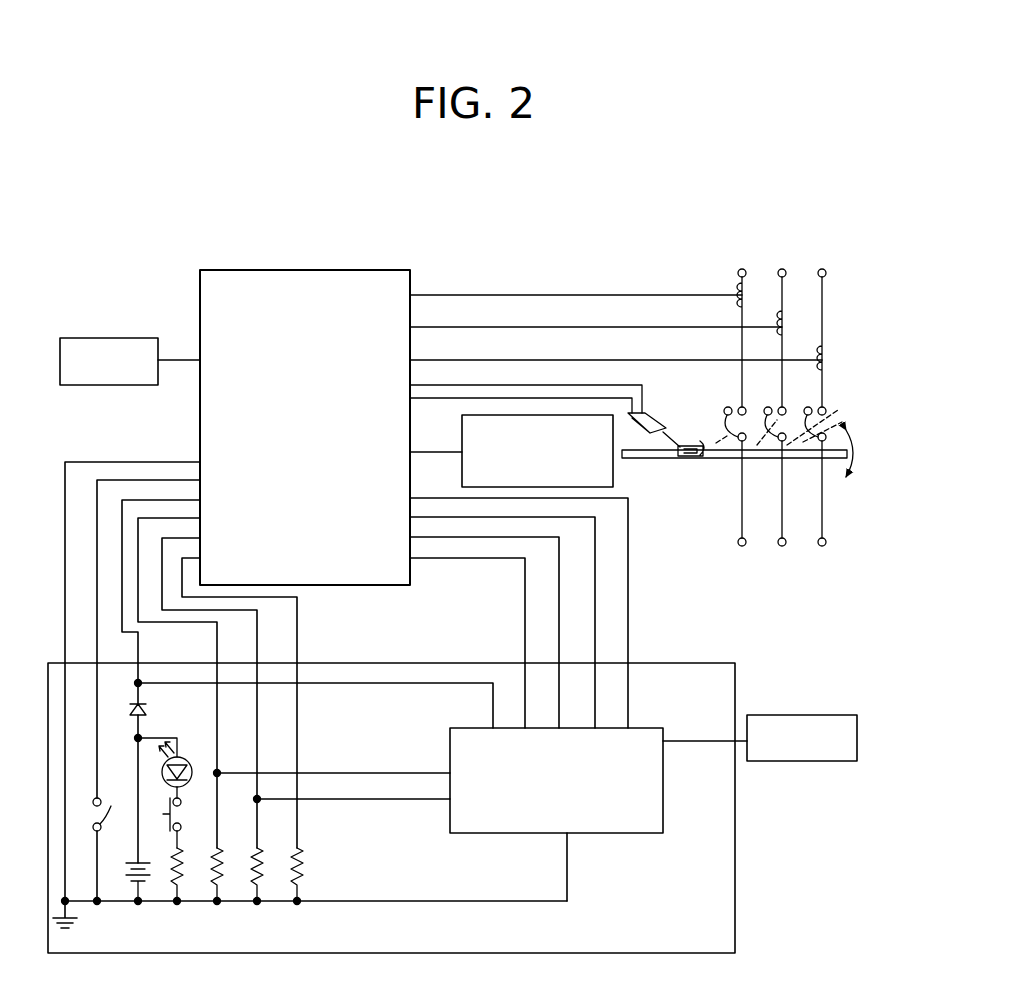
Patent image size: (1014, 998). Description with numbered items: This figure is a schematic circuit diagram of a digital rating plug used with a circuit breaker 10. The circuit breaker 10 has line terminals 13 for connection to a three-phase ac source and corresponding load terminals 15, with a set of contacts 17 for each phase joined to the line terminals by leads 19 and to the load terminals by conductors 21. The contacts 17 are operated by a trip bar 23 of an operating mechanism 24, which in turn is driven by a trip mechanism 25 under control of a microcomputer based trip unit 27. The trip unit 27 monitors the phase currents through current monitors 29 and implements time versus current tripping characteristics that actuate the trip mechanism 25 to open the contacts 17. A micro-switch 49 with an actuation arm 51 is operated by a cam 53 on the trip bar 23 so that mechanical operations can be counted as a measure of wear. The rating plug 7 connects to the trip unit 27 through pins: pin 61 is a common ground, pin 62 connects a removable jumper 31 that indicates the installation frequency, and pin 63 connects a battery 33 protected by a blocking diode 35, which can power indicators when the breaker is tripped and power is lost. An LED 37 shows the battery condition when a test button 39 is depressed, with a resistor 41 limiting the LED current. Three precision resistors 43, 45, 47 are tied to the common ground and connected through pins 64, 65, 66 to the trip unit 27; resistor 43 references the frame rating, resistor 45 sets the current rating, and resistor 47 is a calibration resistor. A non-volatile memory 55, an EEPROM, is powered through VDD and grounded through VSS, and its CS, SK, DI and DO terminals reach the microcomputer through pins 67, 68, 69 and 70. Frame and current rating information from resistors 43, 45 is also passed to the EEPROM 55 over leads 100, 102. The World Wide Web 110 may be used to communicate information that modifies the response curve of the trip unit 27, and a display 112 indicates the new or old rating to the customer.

The rating plug 7 is at (735, 840).
The circuit breaker 10 is at (624, 238).
The line terminals 13 is at (822, 269).
The load terminals 15 is at (820, 538).
The contacts 17 is at (806, 407).
The leads 19 is at (824, 388).
The conductors 21 is at (824, 497).
The trip bar 23 is at (658, 460).
The operating mechanism 24 is at (792, 421).
The trip mechanism 25 is at (462, 436).
The microcomputer based trip unit 27 is at (200, 318).
The current monitors 29 is at (830, 350).
The removable jumper 31 is at (105, 810).
The battery 33 is at (128, 868).
The blocking diode 35 is at (128, 710).
The LED 37 is at (186, 757).
The test button 39 is at (164, 813).
The resistor 41 is at (172, 862).
The precision resistor 43 is at (213, 862).
The precision resistor 45 is at (254, 862).
The calibration resistor 47 is at (304, 862).
The micro-switch 49 is at (655, 412).
The actuation arm 51 is at (672, 440).
The cam 53 is at (698, 462).
The non-volatile memory 55 is at (617, 834).
The pin 61 is at (120, 681).
The pin 62 is at (135, 690).
The pin 63 is at (155, 681).
The pin 64 is at (177, 683).
The pin 65 is at (209, 693).
The pin 66 is at (239, 703).
The pin 67 is at (467, 643).
The pin 68 is at (484, 632).
The pin 69 is at (502, 622).
The pin 70 is at (519, 613).
The lead 100 is at (363, 772).
The lead 102 is at (380, 800).
The World Wide Web 110 is at (102, 338).
The display 112 is at (800, 715).